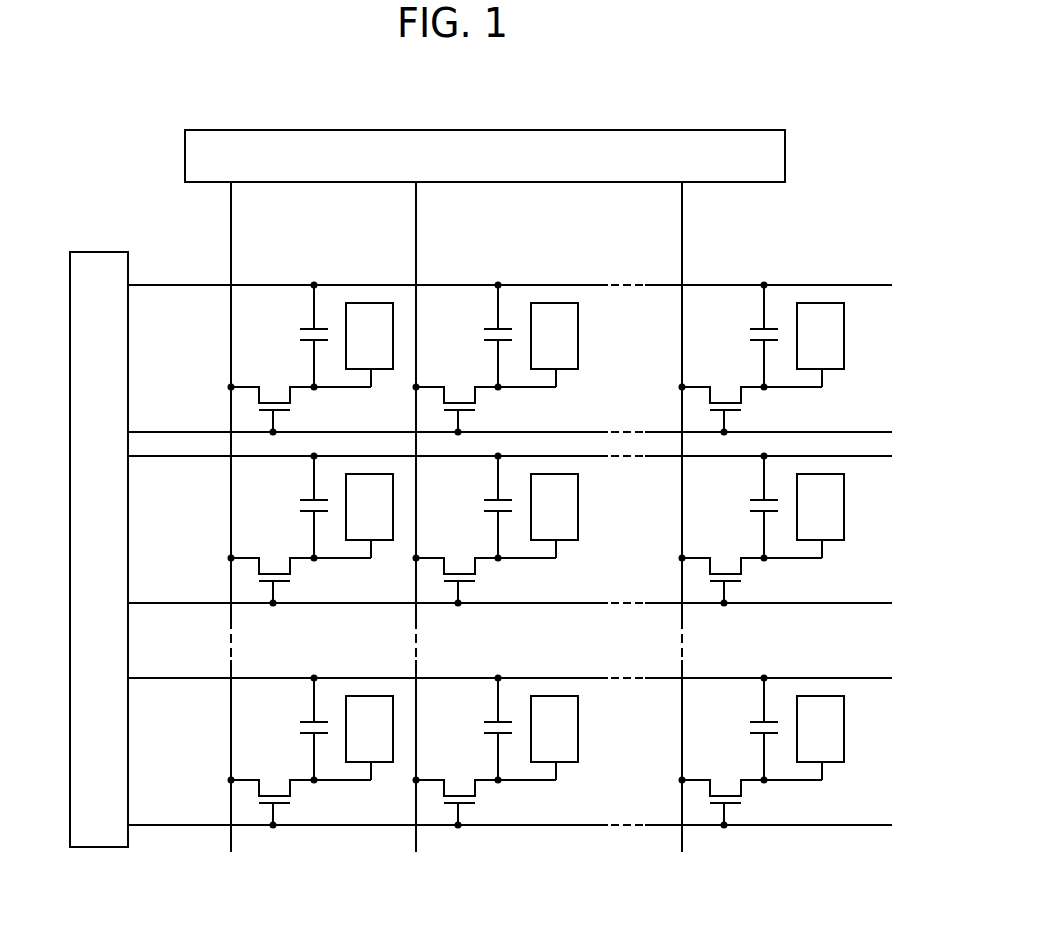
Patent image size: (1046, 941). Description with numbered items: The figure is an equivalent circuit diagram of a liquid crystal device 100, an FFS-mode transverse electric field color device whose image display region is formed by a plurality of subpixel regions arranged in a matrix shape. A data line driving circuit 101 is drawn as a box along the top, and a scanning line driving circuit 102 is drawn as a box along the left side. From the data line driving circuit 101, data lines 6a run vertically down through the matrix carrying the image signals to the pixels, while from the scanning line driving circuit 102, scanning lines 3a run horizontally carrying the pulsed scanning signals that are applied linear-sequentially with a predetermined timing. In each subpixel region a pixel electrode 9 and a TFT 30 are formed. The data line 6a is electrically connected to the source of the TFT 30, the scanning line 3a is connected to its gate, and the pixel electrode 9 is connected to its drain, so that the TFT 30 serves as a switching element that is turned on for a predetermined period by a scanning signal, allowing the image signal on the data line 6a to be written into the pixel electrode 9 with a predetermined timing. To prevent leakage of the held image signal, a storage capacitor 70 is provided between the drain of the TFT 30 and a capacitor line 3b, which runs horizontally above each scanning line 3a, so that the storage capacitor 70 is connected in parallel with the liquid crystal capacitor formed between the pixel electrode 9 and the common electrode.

The liquid crystal device 100 is at (847, 240).
The data line driving circuit 101 is at (185, 157).
The scanning line driving circuit 102 is at (88, 258).
The data line 6a is at (232, 277).
The scanning line 3a is at (216, 430).
The capacitor line 3b is at (216, 283).
The pixel electrode 9 is at (371, 310).
The storage capacitor 70 is at (294, 337).
The TFT 30 is at (294, 410).